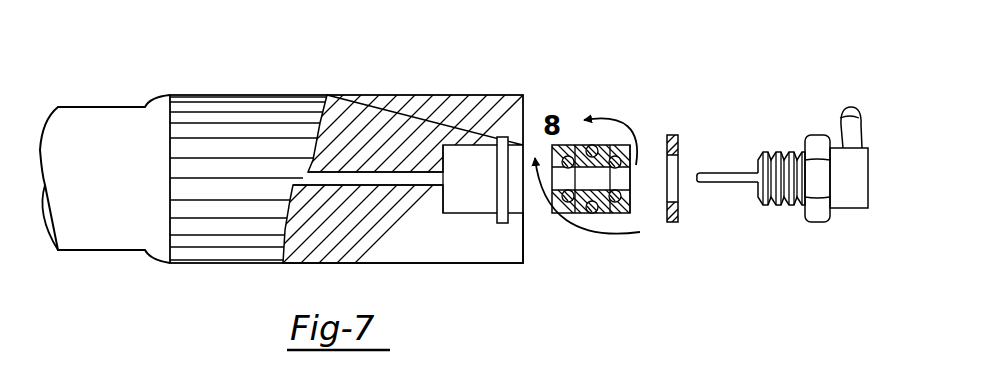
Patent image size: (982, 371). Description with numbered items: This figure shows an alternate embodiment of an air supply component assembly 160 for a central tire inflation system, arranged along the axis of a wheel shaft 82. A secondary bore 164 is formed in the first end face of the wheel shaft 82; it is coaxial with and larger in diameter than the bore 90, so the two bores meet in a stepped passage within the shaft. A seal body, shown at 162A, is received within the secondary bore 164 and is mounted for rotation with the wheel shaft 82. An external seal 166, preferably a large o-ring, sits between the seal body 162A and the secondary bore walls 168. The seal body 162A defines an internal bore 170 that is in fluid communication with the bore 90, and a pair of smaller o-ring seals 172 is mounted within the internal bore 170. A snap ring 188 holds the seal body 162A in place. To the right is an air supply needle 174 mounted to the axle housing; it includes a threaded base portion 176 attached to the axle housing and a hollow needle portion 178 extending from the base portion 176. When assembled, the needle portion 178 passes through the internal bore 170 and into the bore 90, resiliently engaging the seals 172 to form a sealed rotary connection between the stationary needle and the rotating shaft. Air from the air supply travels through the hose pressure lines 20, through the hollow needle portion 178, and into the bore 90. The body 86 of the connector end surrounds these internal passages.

The wheel shaft 82 is at (117, 192).
The connector body 86 is at (523, 100).
The bore 90 is at (378, 179).
The secondary bore walls 168 is at (471, 152).
The secondary bore 164 is at (456, 206).
The internal bore 170 is at (626, 175).
The external seal 166 is at (593, 146).
The seals 172 is at (614, 205).
The seal housing 162A is at (631, 198).
The snap ring 188 is at (677, 213).
The hollow needle portion 178 is at (730, 173).
The threaded base portion 176 is at (768, 152).
The air supply needle 174 is at (831, 212).
The hose pressure lines 20 is at (838, 112).
The air supply component assembly 160 is at (757, 277).